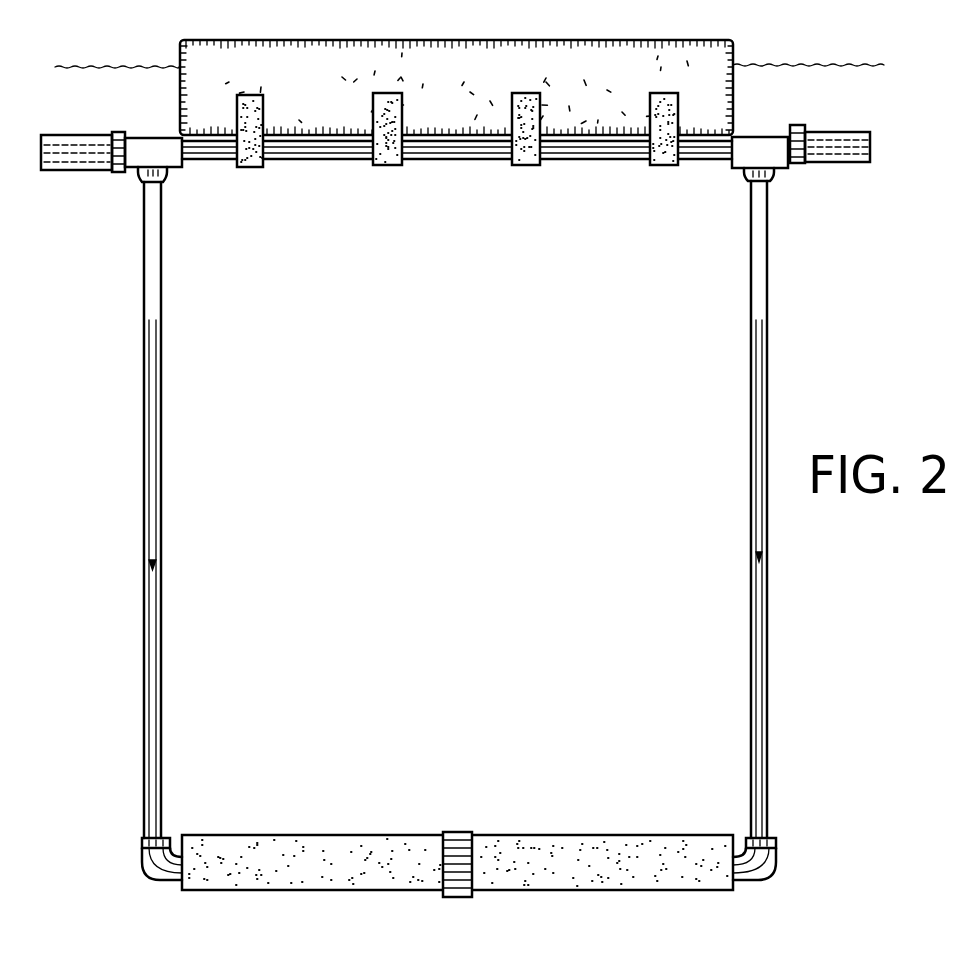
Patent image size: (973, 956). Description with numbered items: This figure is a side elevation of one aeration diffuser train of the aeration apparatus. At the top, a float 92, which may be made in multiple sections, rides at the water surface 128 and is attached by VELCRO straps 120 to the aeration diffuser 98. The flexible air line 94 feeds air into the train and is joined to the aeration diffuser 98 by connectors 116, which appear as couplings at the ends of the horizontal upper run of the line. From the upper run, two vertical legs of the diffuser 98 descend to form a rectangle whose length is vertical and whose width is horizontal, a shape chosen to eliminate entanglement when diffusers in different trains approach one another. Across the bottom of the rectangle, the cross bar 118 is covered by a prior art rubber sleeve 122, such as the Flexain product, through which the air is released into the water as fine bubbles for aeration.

The float 92 is at (708, 84).
The flexible air line 94 is at (868, 147).
The aeration diffuser 98 is at (159, 693).
The connector 116 is at (797, 165).
The cross bar 118 is at (142, 856).
The VELCRO strap 120 is at (518, 167).
The rubber sleeve 122 is at (550, 858).
The water surface 128 is at (770, 65).